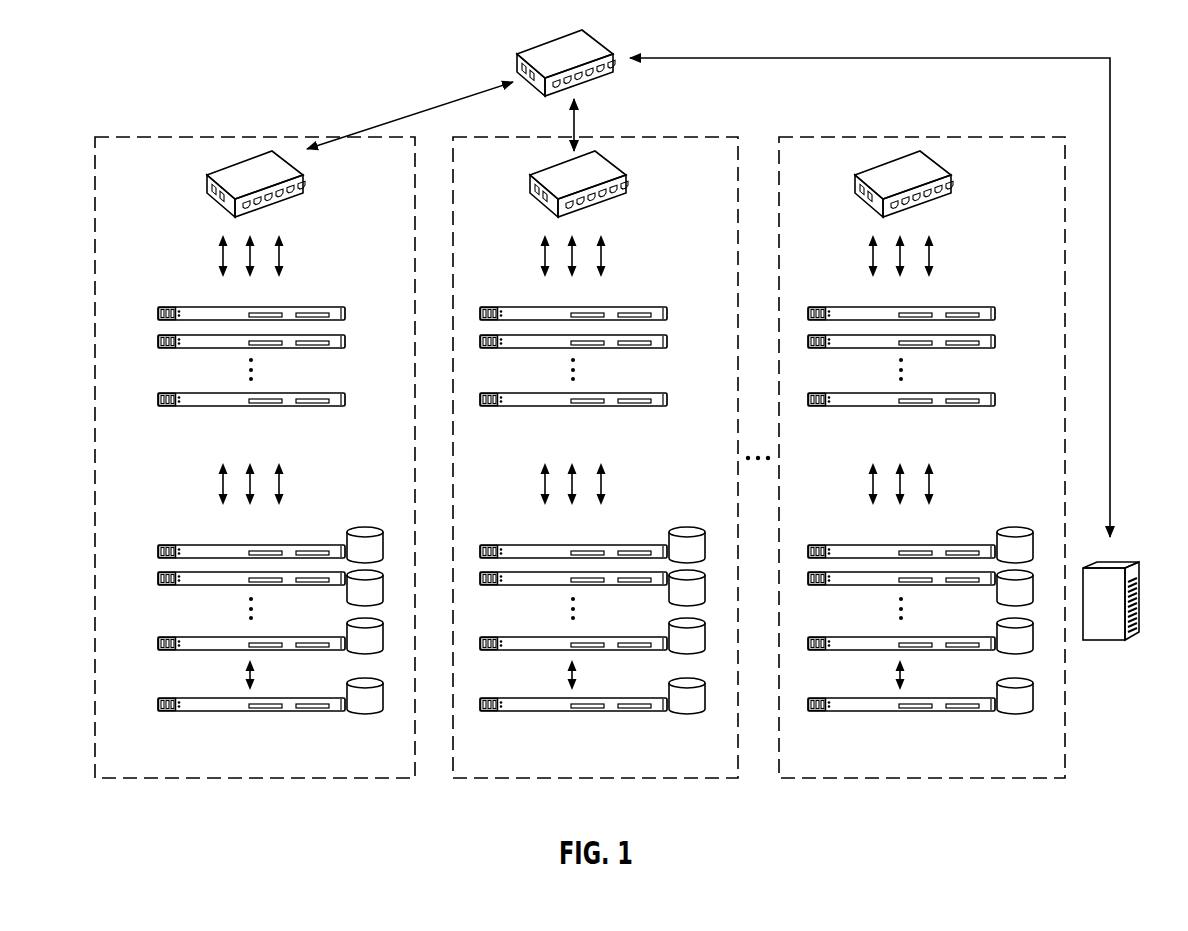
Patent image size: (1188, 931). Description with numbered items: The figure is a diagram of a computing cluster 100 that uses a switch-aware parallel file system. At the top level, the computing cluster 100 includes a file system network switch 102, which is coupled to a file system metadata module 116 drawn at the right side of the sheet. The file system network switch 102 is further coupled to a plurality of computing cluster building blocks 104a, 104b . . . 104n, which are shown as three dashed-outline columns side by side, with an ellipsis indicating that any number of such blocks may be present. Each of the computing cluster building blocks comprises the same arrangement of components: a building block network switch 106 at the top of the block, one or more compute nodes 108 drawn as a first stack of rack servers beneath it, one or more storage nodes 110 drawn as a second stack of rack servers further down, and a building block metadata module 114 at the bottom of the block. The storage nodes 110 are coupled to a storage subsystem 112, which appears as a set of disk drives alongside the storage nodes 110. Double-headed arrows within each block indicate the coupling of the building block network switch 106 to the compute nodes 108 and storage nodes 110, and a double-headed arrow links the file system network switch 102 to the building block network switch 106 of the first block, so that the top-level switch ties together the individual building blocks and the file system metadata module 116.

The computing cluster 100 is at (262, 83).
The file system network switch 102 is at (552, 41).
The computing cluster building block 104a is at (279, 779).
The computing cluster building block 104b is at (615, 779).
The computing cluster building block 104n is at (930, 779).
The building block network switch 106 is at (207, 186).
The compute node 108 is at (158, 316).
The storage node 110 is at (158, 555).
The storage subsystem 112 is at (367, 527).
The building block metadata module 114 is at (158, 708).
The file system metadata module 116 is at (1124, 562).